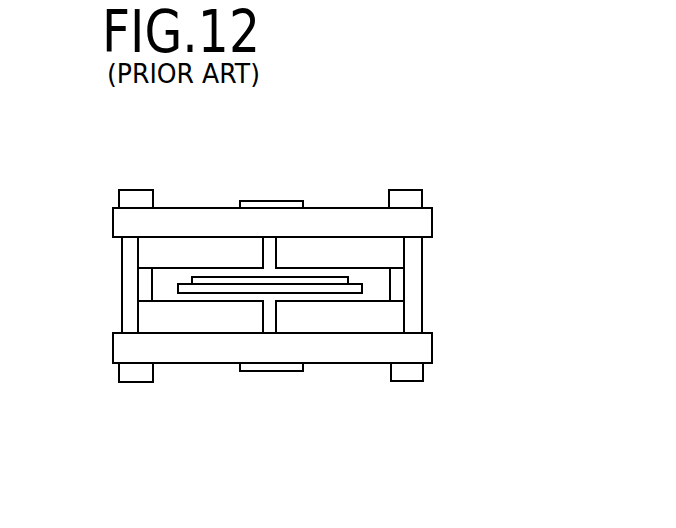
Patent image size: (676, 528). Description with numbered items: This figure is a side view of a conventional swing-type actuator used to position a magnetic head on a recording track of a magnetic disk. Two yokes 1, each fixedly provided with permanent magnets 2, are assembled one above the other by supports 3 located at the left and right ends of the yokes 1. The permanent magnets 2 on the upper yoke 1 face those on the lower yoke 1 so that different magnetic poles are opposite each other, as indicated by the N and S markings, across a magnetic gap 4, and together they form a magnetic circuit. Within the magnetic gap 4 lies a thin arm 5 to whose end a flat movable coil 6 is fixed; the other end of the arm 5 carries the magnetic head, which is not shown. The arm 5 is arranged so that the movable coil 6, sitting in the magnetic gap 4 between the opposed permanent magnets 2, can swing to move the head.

The yoke 1 is at (427, 227).
The permanent magnet 2 is at (180, 243).
The support 3 is at (414, 290).
The magnetic gap 4 is at (163, 282).
The arm 5 is at (256, 294).
The flat movable coil 6 is at (312, 280).